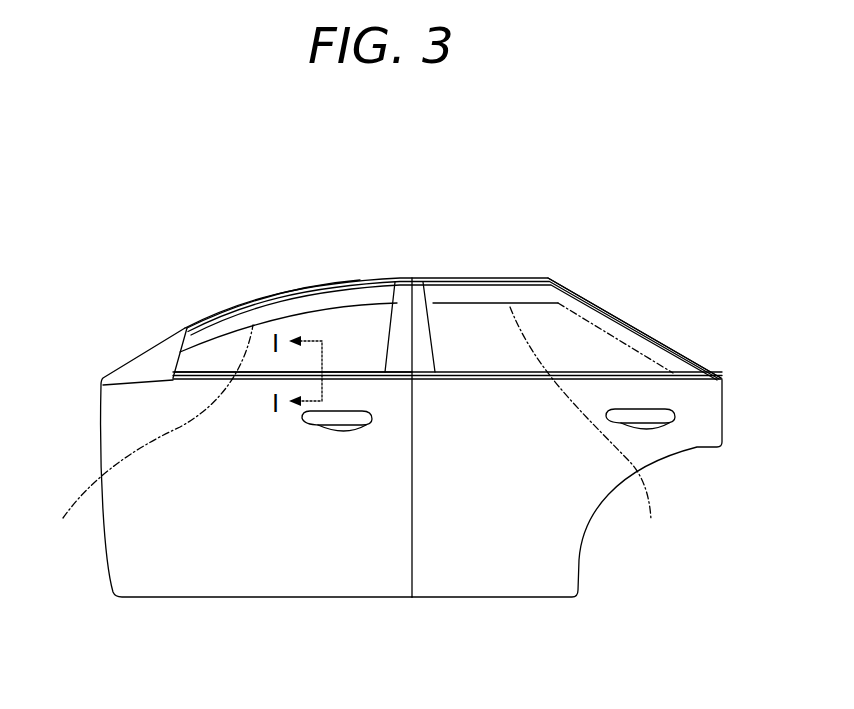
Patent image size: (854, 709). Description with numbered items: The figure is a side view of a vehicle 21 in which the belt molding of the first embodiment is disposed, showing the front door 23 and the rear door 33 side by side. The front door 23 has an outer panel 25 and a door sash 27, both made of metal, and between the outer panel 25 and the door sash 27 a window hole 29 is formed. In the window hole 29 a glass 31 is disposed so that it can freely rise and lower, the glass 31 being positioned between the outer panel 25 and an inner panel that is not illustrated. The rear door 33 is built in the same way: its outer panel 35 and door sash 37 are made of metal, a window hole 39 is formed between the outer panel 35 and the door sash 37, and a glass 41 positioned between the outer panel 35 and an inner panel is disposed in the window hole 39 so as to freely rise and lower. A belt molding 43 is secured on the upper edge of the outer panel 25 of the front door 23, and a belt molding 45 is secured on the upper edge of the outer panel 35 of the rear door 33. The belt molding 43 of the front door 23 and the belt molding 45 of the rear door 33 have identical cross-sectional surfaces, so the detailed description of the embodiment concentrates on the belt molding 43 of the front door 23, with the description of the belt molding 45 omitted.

The vehicle 21 is at (447, 220).
The front door 23 is at (300, 268).
The outer panel 25 is at (265, 575).
The door sash 27 is at (224, 313).
The window hole 29 is at (355, 300).
The glass 31 is at (152, 440).
The rear door 33 is at (494, 262).
The outer panel 35 is at (505, 575).
The door sash 37 is at (590, 298).
The window hole 39 is at (537, 292).
The glass 41 is at (587, 432).
The belt molding 43 is at (200, 373).
The belt molding 45 is at (597, 373).